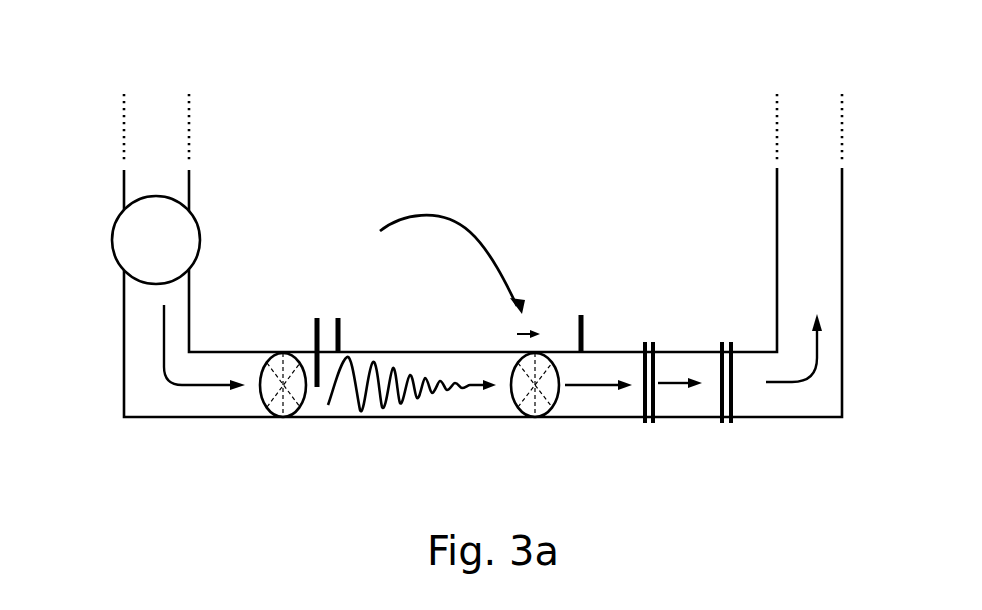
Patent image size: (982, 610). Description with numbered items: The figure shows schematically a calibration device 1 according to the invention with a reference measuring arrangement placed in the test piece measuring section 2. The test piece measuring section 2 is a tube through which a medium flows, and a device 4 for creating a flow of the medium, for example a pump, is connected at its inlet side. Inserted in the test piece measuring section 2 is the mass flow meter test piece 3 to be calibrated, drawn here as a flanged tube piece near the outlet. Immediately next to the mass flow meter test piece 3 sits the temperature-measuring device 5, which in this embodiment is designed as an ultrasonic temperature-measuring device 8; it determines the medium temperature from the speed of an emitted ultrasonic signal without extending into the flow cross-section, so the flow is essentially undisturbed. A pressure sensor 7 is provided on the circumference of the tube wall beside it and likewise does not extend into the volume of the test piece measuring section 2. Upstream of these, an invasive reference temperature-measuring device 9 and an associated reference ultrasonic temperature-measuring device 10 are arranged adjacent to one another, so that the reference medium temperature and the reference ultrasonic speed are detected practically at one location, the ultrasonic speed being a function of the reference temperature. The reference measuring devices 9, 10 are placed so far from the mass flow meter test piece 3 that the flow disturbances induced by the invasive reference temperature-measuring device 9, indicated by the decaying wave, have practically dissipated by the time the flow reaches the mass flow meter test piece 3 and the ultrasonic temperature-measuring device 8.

The calibration device 1 is at (498, 198).
The test piece measuring section 2 is at (124, 390).
The mass flow meter test piece 3 is at (693, 420).
The device for creating a flow 4 is at (117, 216).
The temperature-measuring device 5 is at (543, 420).
The pressure sensor 7 is at (585, 332).
The ultrasonic temperature-measuring device 8 is at (562, 435).
The invasive reference temperature-measuring device 9 is at (309, 400).
The reference ultrasonic temperature-measuring device 10 is at (272, 420).